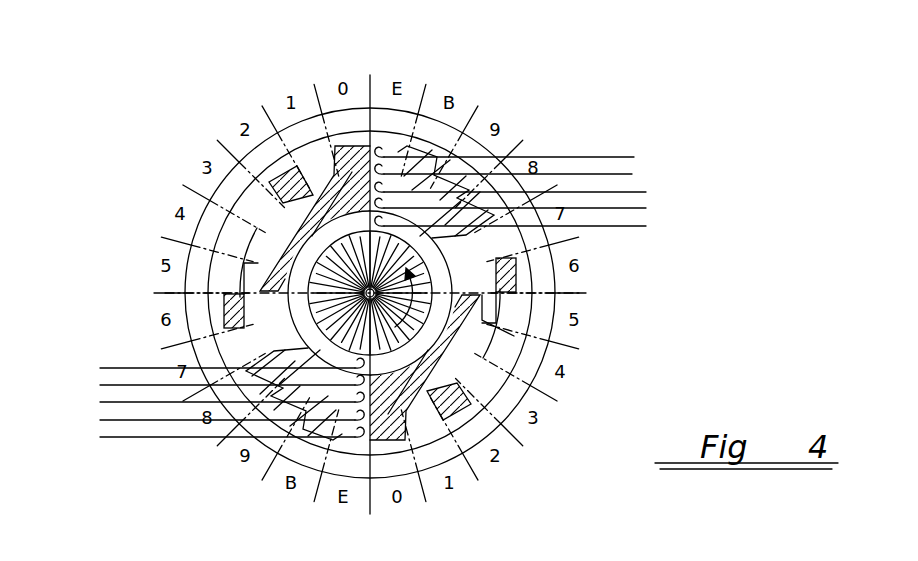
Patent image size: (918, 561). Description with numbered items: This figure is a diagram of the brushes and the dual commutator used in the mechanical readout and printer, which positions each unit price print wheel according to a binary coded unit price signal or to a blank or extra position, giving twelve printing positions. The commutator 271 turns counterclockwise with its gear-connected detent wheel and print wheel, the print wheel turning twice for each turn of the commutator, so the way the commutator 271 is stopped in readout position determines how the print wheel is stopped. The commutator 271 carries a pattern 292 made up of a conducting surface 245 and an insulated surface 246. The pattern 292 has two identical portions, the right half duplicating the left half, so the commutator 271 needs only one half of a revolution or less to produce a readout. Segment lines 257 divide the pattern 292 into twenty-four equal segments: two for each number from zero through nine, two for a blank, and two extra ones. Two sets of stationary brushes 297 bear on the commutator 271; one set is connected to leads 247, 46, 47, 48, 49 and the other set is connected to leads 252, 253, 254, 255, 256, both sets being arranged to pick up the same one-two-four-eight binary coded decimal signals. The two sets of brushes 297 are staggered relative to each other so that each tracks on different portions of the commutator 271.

The commutator 271 is at (266, 98).
The segment lines 257 is at (423, 100).
The stationary brushes 297 is at (384, 156).
The lead 247 is at (100, 367).
The lead 46 is at (100, 385).
The lead 47 is at (100, 402).
The lead 48 is at (100, 420).
The lead 49 is at (100, 437).
The lead 256 is at (632, 157).
The lead 255 is at (630, 174).
The lead 254 is at (645, 192).
The lead 253 is at (645, 208).
The lead 252 is at (645, 226).
The insulated surface 246 is at (517, 282).
The conducting surface 245 is at (519, 313).
The pattern 292 is at (535, 376).